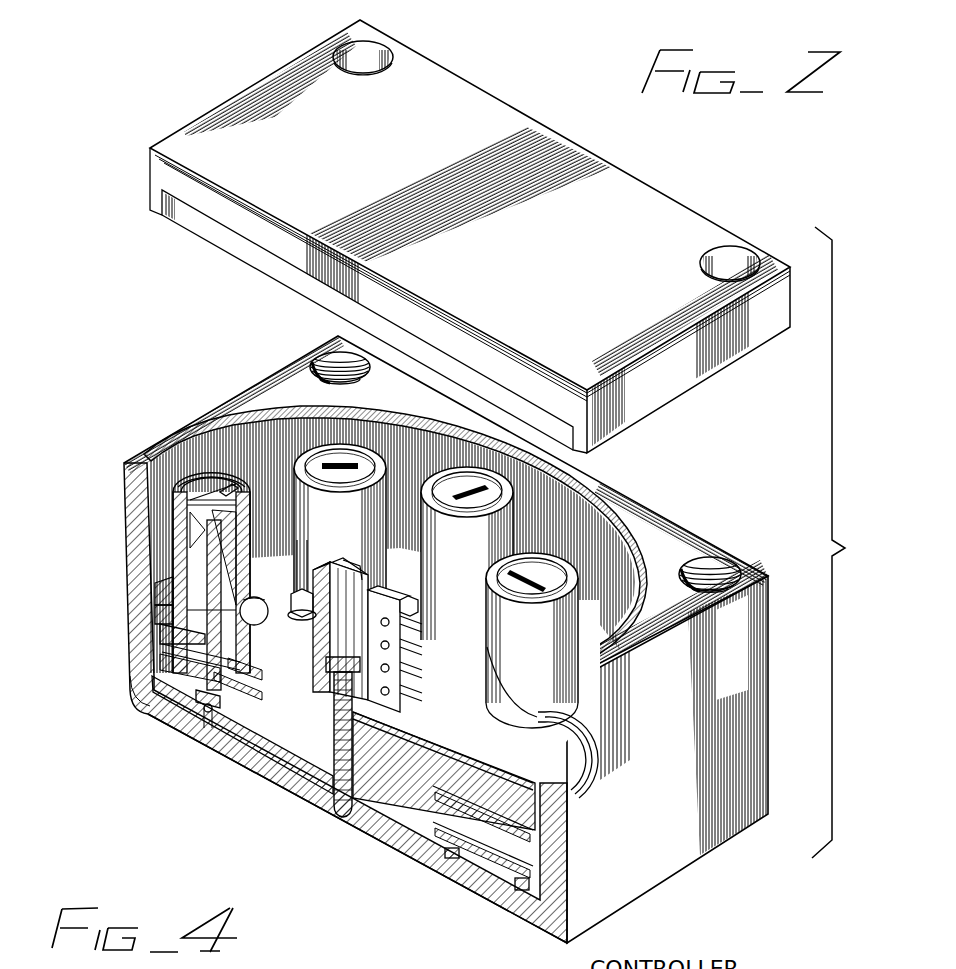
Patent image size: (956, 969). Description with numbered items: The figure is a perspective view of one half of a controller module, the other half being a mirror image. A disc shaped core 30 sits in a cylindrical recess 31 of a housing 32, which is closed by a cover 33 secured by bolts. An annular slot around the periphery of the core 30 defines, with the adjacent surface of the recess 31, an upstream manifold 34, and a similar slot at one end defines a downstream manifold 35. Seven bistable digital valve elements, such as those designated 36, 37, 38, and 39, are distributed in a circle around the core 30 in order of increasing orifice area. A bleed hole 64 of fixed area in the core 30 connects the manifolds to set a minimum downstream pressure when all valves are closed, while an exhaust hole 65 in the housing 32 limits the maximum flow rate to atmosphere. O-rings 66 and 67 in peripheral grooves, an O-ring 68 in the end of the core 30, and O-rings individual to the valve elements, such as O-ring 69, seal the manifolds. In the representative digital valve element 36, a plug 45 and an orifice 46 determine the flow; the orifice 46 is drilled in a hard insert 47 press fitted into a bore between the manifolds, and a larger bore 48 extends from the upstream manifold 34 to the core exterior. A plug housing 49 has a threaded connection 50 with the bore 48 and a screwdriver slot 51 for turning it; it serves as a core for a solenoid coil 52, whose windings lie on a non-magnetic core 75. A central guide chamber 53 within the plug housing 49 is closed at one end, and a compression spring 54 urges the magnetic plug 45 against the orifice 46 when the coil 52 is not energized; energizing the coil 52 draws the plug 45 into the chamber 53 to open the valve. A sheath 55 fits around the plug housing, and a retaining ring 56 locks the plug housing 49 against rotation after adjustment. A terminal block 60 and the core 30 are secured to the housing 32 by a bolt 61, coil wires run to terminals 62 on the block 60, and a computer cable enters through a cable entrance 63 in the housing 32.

In FIG. 4, the core 30 is at (428, 716).
In FIG. 4, the cylindrical recess 31 is at (572, 482).
In FIG. 4, the housing 32 is at (770, 705).
In FIG. 2, the cover 33 is at (663, 190).
In FIG. 4, the upstream manifold 34 is at (415, 862).
In FIG. 4, the downstream manifold 35 is at (512, 905).
In FIG. 4, the digital valve element 36 is at (188, 476).
In FIG. 4, the digital valve element 37 is at (329, 529).
In FIG. 4, the digital valve element 38 is at (456, 559).
In FIG. 4, the digital valve element 39 is at (528, 638).
In FIG. 4, the plug 45 is at (258, 624).
In FIG. 4, the orifice 46 is at (185, 725).
In FIG. 4, the insert 47 is at (182, 712).
In FIG. 4, the bore 48 is at (162, 636).
In FIG. 4, the plug housing 49 is at (230, 494).
In FIG. 4, the threaded connection 50 is at (172, 625).
In FIG. 4, the screwdriver slot 51 is at (210, 478).
In FIG. 4, the solenoid coil 52 is at (190, 508).
In FIG. 4, the central guide chamber 53 is at (165, 650).
In FIG. 4, the compression spring 54 is at (210, 563).
In FIG. 4, the sheath 55 is at (178, 492).
In FIG. 4, the retaining ring 56 is at (160, 592).
In FIG. 4, the terminal block 60 is at (350, 568).
In FIG. 4, the bolt 61 is at (338, 818).
In FIG. 4, the terminals 62 is at (420, 678).
In FIG. 4, the cable entrance 63 is at (572, 758).
In FIG. 4, the hole 64 is at (450, 868).
In FIG. 4, the hole 65 is at (205, 742).
In FIG. 4, the O-ring 66 is at (158, 610).
In FIG. 4, the O-ring 67 is at (132, 685).
In FIG. 4, the O-ring 68 is at (298, 788).
In FIG. 4, the O-ring 69 is at (240, 664).
In FIG. 4, the core 75 is at (205, 528).